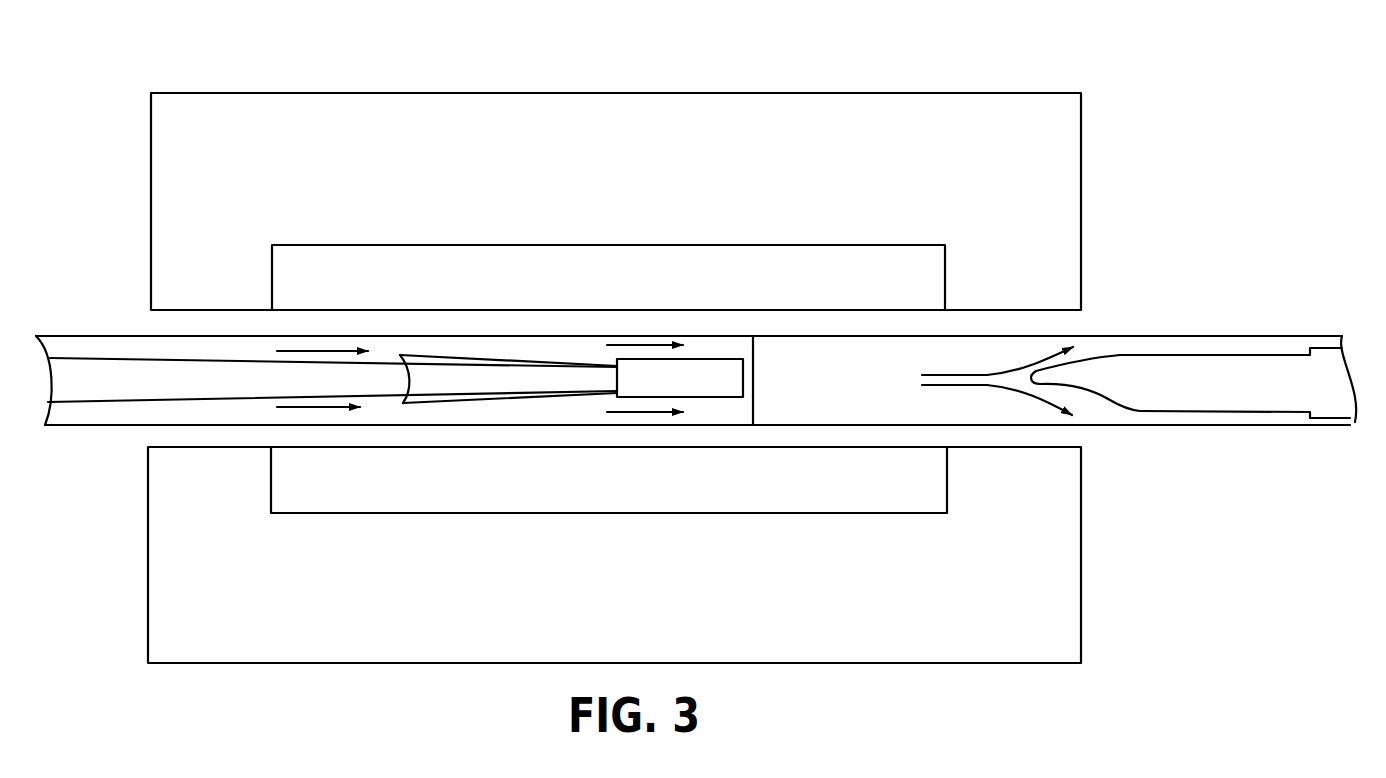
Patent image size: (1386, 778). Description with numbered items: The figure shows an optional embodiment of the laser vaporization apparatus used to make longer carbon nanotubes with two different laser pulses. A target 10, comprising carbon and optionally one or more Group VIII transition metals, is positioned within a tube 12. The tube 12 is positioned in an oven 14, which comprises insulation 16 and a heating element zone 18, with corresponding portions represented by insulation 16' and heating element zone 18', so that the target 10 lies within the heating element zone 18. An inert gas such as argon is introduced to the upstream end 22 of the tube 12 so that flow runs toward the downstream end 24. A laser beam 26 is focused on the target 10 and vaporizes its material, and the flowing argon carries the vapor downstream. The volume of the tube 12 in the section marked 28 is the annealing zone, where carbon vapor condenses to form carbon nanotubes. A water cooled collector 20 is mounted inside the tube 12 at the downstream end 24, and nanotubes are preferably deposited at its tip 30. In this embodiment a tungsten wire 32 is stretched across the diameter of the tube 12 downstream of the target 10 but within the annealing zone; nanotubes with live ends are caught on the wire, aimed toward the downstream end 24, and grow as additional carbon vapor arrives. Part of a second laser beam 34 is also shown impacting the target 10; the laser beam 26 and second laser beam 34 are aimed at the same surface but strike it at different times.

The target 10 is at (715, 397).
The tube 12 is at (1105, 336).
The oven 14 is at (122, 138).
The insulation 16 is at (616, 176).
The insulation 16' is at (614, 579).
The heating element zone 18 is at (593, 172).
The heating element zone 18' is at (587, 586).
The water cooled collector 20 is at (1258, 412).
The upstream end 22 is at (45, 423).
The downstream end 24 is at (1355, 422).
The laser beam 26 is at (60, 360).
The annealing zone 28 is at (618, 321).
The tip 30 is at (1118, 403).
The tungsten wire 32 is at (757, 407).
The second laser beam 34 is at (448, 353).